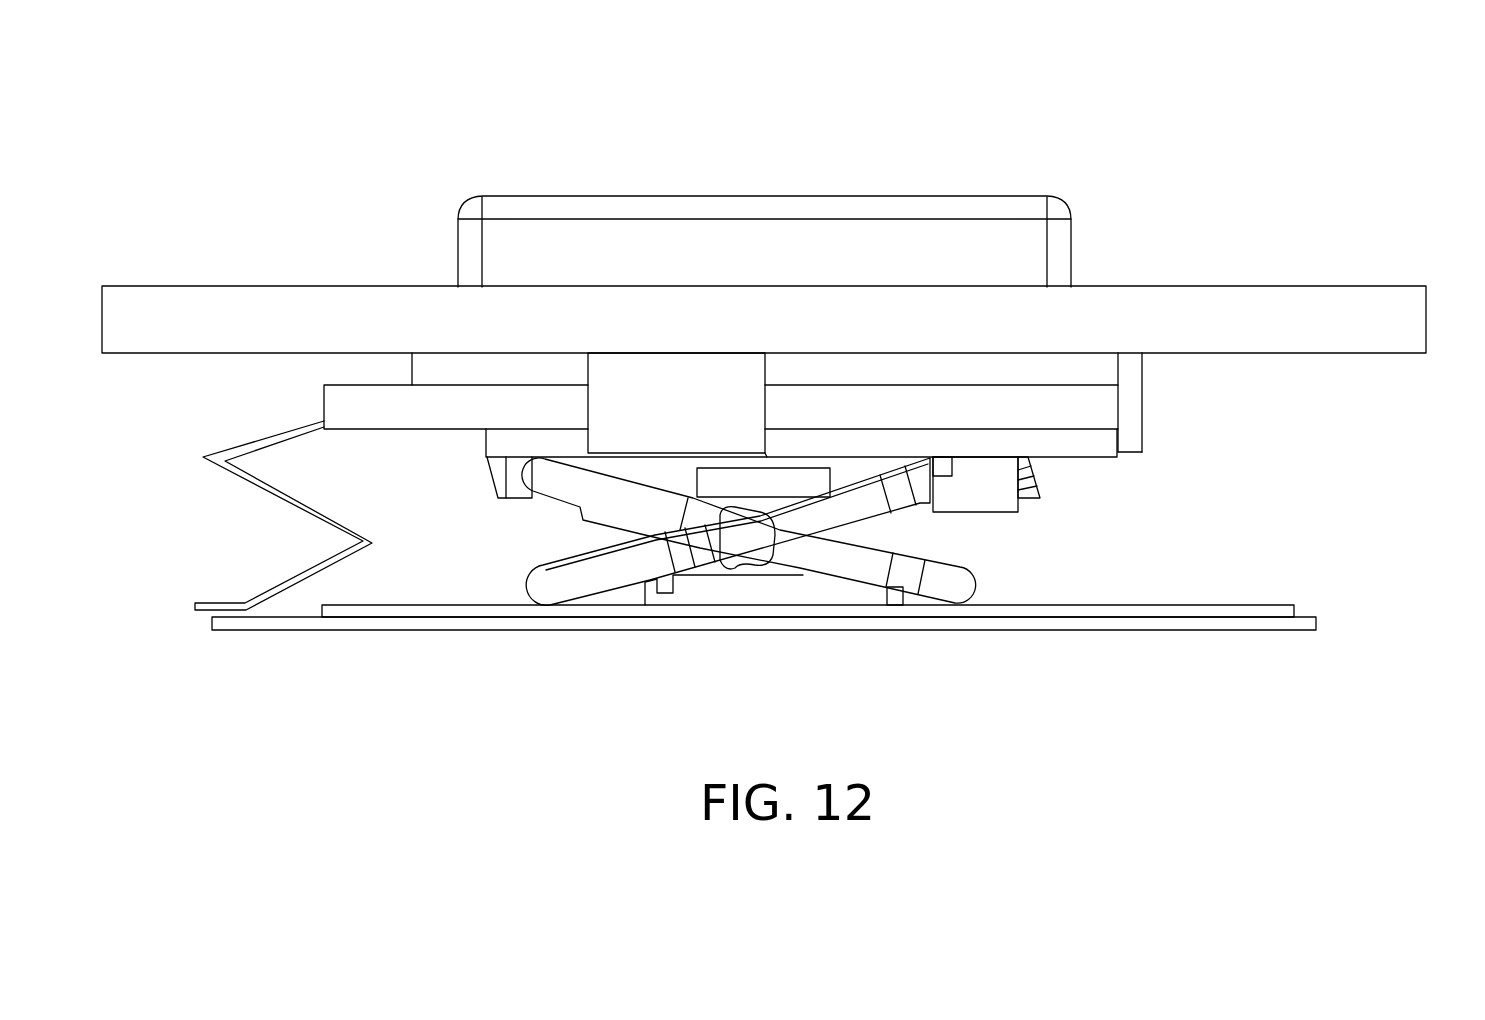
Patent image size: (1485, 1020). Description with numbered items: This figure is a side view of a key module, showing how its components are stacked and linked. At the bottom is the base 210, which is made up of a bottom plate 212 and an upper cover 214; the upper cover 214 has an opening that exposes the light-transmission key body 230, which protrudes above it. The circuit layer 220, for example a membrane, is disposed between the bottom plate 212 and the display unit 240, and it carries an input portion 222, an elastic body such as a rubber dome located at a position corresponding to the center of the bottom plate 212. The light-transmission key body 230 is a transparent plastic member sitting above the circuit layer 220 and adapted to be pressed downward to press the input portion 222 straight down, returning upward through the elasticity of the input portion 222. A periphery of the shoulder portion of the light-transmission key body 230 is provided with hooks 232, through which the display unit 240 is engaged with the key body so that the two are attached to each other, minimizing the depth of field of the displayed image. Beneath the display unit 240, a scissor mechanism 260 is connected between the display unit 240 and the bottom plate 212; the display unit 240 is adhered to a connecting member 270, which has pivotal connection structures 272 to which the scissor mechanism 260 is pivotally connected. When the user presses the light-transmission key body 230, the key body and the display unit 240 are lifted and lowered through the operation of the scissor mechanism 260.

The base 210 is at (789, 458).
The bottom plate 212 is at (1292, 625).
The upper cover 214 is at (1327, 337).
The circuit layer 220 is at (1022, 610).
The input portion 222 is at (758, 477).
The light-transmission key body 230 is at (942, 247).
The hook 232 is at (662, 405).
The display unit 240 is at (357, 400).
The scissor mechanism 260 is at (1012, 550).
The connecting member 270 is at (503, 440).
The pivotal connection structure 272 is at (517, 480).